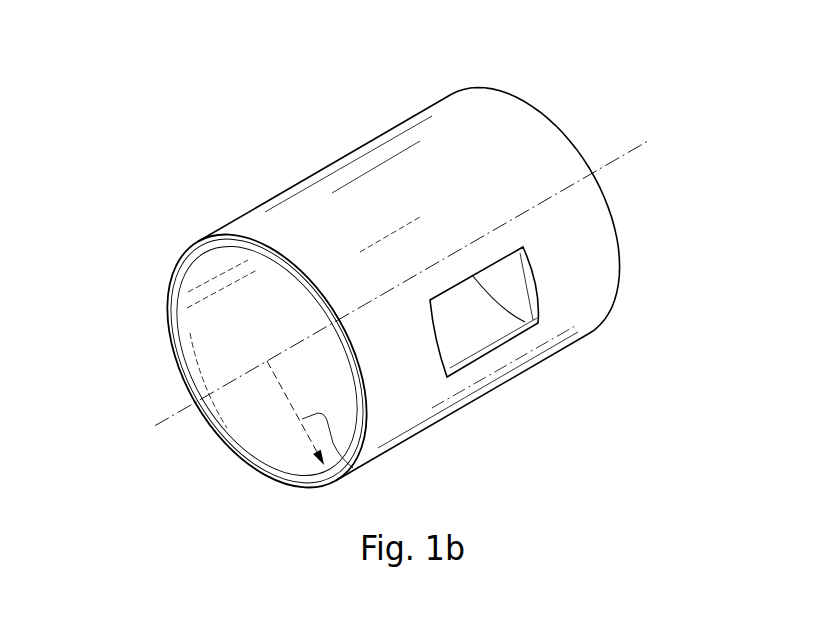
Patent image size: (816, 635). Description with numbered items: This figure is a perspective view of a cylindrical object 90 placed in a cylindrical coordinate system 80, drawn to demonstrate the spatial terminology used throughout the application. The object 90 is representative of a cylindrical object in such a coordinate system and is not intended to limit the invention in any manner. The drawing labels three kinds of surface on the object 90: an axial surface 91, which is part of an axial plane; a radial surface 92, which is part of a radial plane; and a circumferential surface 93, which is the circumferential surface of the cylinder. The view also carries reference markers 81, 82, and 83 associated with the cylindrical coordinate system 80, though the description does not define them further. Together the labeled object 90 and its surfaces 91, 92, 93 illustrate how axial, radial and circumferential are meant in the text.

The cylindrical coordinate system 80 is at (550, 100).
The longitudinal axis 81 is at (151, 427).
The inner surface / bore 82 is at (353, 464).
The front end face 83 is at (174, 271).
The cylindrical object 90 is at (426, 95).
The axial surface 91 is at (512, 327).
The radial surface 92 is at (278, 481).
The circumferential surface 93 is at (372, 188).